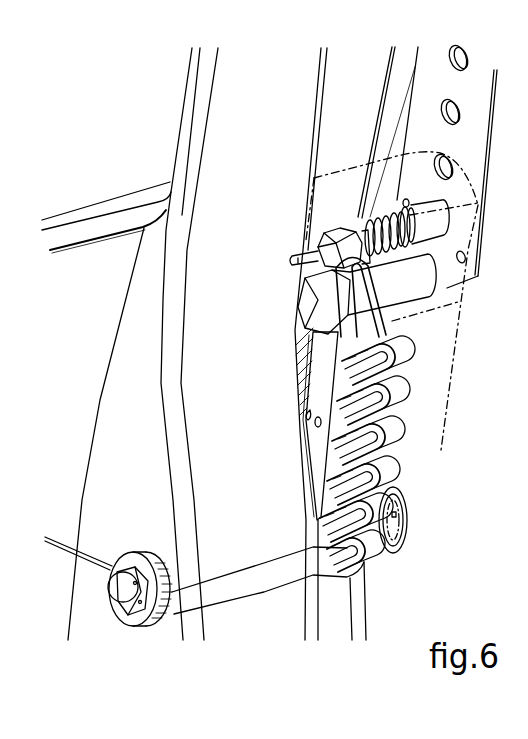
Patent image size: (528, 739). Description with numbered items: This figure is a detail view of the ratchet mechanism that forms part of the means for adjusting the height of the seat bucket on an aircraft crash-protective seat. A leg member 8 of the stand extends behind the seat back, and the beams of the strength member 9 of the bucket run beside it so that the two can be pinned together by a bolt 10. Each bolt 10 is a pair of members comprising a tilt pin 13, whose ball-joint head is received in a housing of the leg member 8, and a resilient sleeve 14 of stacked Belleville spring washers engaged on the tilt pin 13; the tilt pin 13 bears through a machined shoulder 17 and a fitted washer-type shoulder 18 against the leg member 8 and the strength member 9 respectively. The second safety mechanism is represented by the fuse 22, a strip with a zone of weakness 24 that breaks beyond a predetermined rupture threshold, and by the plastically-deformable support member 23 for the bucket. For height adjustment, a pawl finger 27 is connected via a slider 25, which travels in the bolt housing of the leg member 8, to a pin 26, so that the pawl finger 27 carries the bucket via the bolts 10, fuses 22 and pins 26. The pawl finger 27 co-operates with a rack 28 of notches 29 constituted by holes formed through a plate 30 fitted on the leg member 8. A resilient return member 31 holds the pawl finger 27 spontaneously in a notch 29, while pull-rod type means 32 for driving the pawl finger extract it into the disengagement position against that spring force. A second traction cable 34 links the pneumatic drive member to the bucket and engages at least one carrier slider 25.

The leg member 8 is at (447, 404).
The strength member 9 is at (139, 408).
The bolt 10 is at (108, 560).
The tilt pin 13 is at (109, 610).
The resilient sleeve 14 is at (172, 610).
The shoulder 17 is at (405, 527).
The shoulder 18 is at (148, 626).
The fuse 22 is at (294, 370).
The plastically-deformable support member 23 is at (396, 443).
The zone of weakness 24 is at (314, 420).
The slider 25 is at (473, 167).
The pin 26 is at (404, 300).
The pawl finger 27 is at (317, 243).
The rack 28 is at (418, 142).
The notch 29 is at (441, 116).
The plate 30 is at (449, 262).
The resilient return member 31 is at (370, 218).
The means for driving the pawl fingers 32 is at (302, 243).
The second traction cable 34 is at (392, 68).